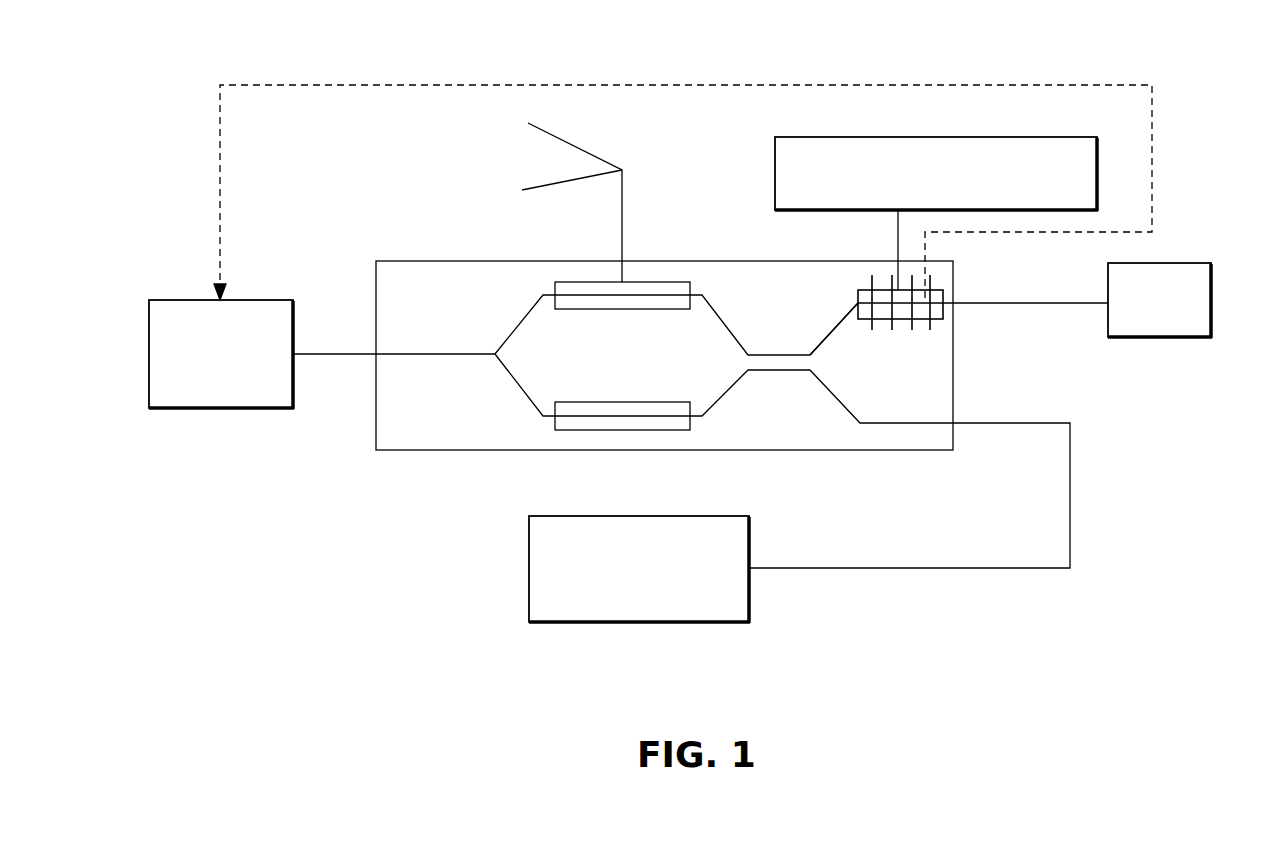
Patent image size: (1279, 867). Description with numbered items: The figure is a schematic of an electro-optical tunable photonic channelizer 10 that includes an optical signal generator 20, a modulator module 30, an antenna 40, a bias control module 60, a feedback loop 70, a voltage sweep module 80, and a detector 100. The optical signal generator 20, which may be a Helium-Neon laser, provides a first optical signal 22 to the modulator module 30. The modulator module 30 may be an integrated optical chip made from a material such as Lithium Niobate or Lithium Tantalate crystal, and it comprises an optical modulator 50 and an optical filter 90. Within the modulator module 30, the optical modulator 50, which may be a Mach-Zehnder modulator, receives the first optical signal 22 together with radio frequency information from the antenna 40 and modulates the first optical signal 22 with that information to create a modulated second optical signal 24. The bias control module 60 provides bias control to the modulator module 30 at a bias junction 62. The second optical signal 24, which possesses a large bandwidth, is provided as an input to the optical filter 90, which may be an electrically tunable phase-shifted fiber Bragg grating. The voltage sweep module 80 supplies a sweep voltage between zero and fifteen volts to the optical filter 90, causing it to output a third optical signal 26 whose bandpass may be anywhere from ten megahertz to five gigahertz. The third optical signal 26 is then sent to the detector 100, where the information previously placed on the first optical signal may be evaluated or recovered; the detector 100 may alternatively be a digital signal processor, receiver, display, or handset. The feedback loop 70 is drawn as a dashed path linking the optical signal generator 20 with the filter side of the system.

The electro-optical tunable photonic channelizer 10 is at (1212, 637).
The optical signal generator 20 is at (248, 299).
The first optical signal 22 is at (317, 353).
The second optical signal 24 is at (835, 330).
The third optical signal 26 is at (990, 303).
The modulator module 30 is at (410, 460).
The antenna 40 is at (535, 157).
The optical modulator 50 is at (645, 283).
The bias control module 60 is at (685, 516).
The bias junction 62 is at (597, 402).
The feedback loop 70 is at (748, 85).
The voltage sweep module 80 is at (950, 137).
The optical filter 90 is at (905, 337).
The detector 100 is at (1190, 263).